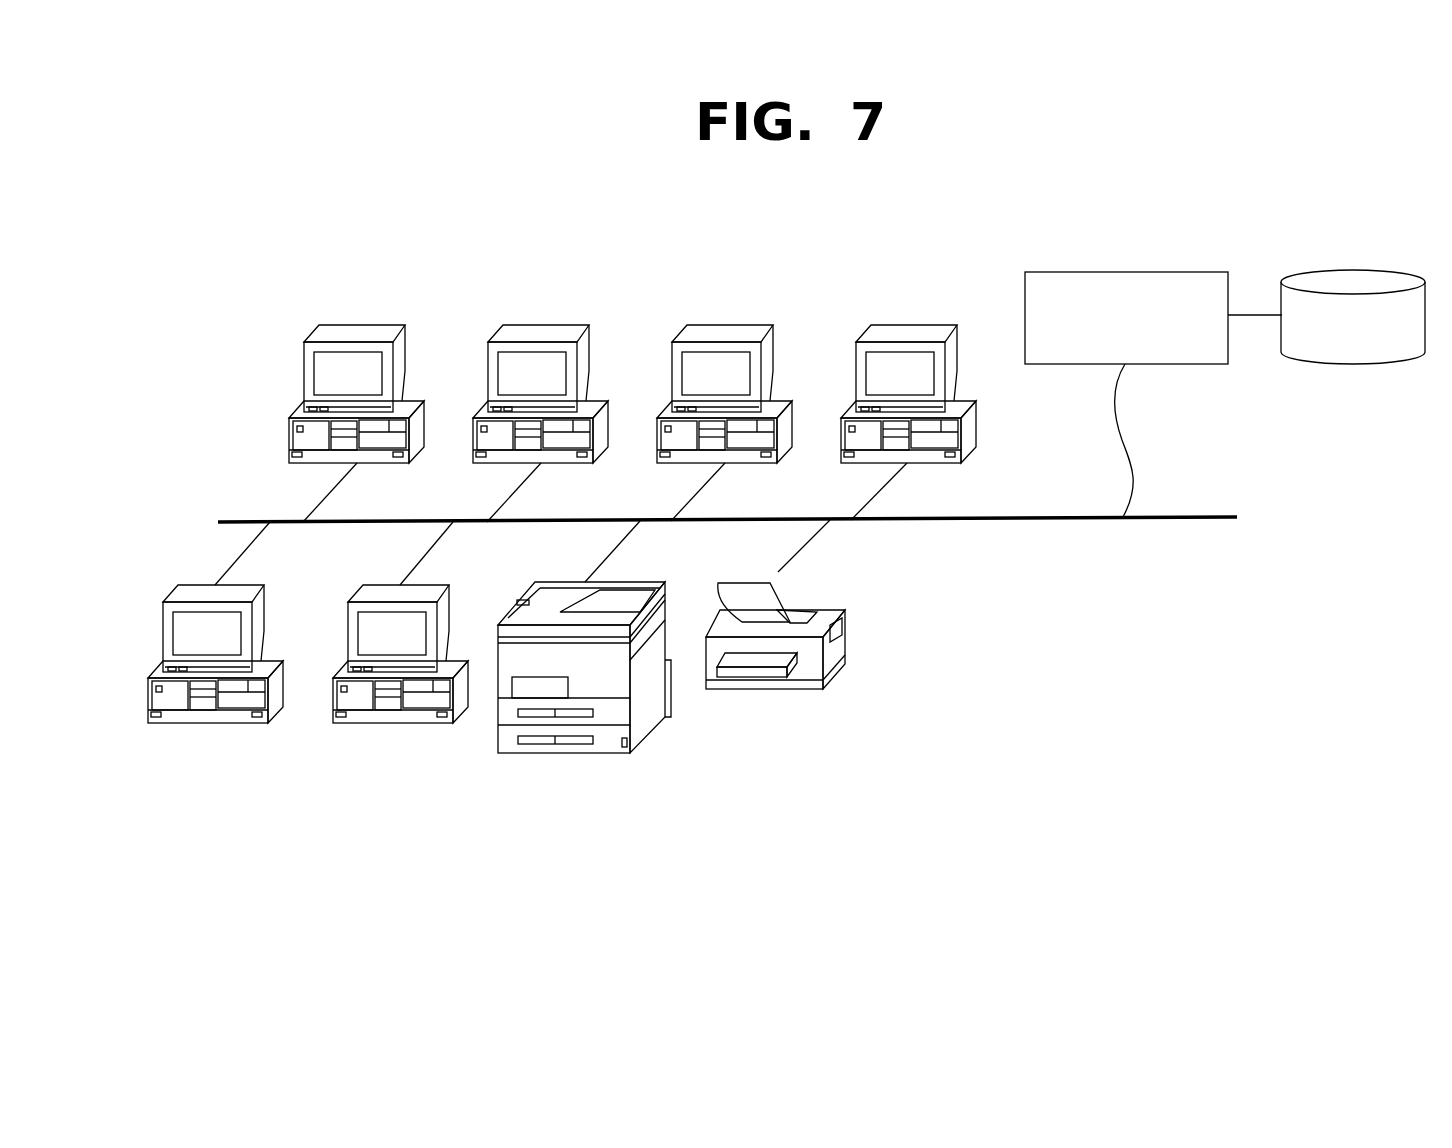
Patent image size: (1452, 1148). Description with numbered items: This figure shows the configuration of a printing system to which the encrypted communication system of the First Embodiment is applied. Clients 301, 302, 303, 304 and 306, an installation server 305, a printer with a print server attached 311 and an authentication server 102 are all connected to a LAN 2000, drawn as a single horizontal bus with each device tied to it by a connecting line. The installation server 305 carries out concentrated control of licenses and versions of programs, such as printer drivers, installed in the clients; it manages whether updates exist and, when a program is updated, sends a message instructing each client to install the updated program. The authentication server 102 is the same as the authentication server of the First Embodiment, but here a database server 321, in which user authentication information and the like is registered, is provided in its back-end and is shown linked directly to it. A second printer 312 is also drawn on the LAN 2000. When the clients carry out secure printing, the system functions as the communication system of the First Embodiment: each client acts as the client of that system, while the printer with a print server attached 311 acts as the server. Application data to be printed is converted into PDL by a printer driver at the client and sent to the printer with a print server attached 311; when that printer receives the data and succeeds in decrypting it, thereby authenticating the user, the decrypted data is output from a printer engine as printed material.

The client 301 is at (358, 282).
The client 302 is at (542, 282).
The client 303 is at (726, 282).
The client 304 is at (910, 282).
The installation server 305 is at (207, 765).
The client 306 is at (391, 762).
The printer with a print server attached 311 is at (579, 845).
The printer PRINTER02 312 is at (760, 732).
The authentication server 102 is at (1122, 272).
The database server 321 is at (1349, 270).
The LAN 2000 is at (1038, 519).